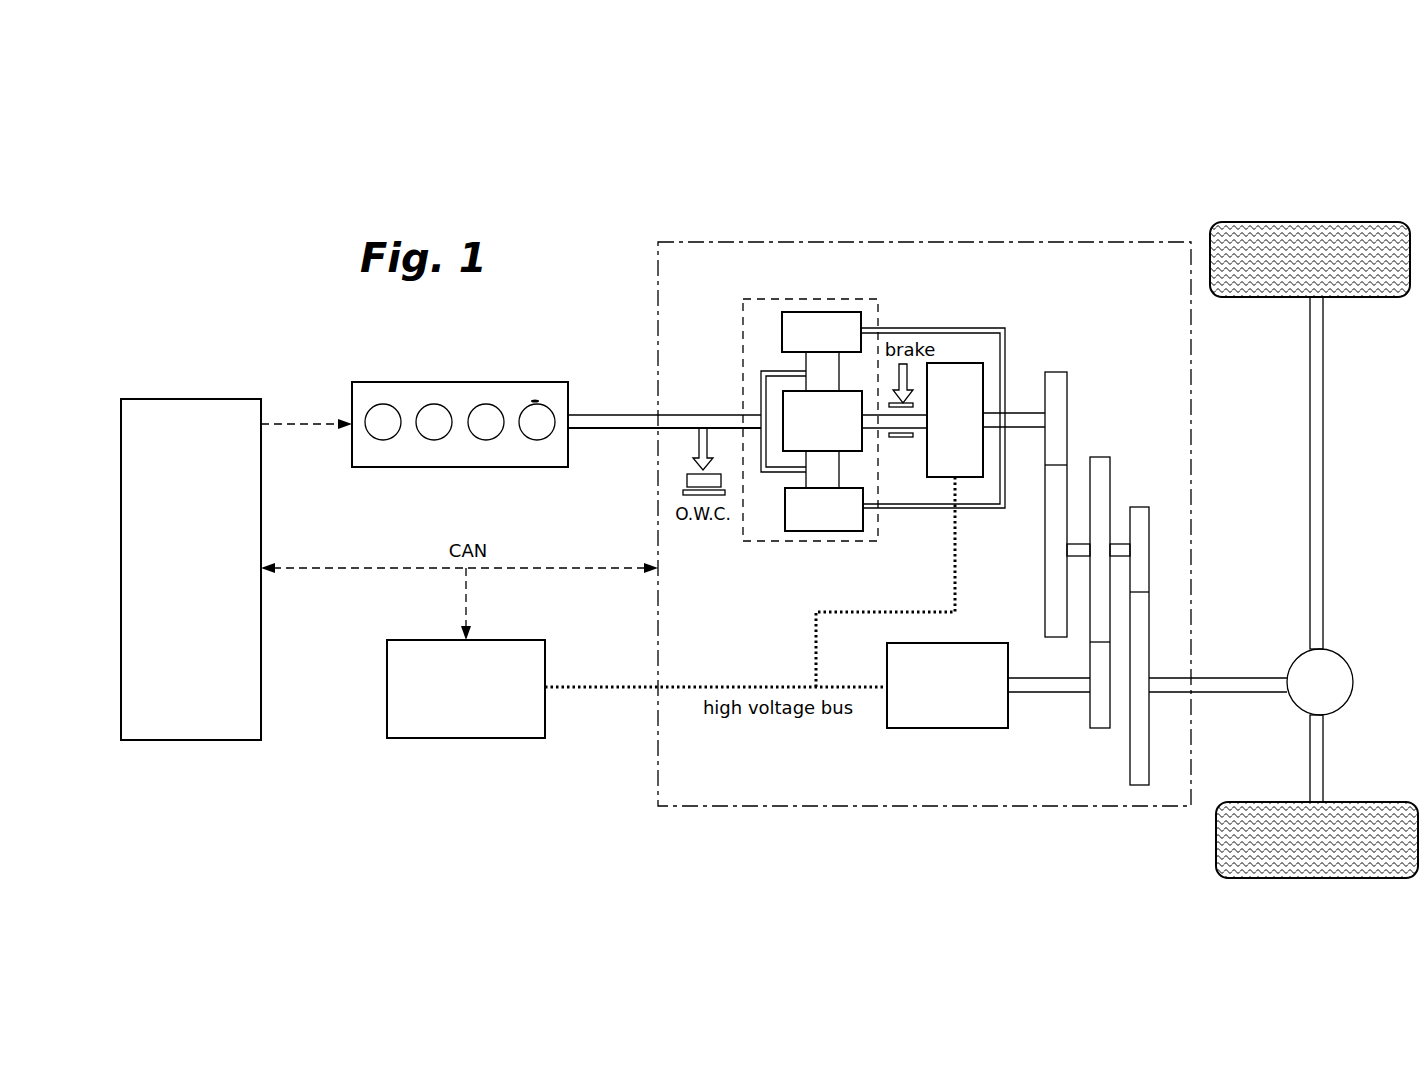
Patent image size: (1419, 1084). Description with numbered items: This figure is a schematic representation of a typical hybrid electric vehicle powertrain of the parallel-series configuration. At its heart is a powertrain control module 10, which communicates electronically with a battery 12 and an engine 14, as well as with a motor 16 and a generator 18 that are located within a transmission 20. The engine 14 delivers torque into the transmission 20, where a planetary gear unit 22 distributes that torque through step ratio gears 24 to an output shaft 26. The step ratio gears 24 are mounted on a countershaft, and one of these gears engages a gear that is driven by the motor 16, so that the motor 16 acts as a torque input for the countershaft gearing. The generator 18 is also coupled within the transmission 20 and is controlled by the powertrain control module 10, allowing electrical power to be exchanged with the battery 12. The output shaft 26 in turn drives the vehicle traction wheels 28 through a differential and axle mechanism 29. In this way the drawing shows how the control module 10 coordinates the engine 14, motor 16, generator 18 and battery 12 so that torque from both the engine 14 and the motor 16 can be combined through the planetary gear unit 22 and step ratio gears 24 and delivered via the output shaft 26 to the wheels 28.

The powertrain control module 10 is at (210, 399).
The battery 12 is at (487, 740).
The engine 14 is at (528, 382).
The motor 16 is at (952, 730).
The generator 18 is at (983, 373).
The transmission 20 is at (765, 812).
The planetary gear unit 22 is at (878, 313).
The step ratio gears 24 is at (865, 449).
The output shaft 26 is at (1260, 694).
The vehicle traction wheels 28 is at (1350, 222).
The differential and axle mechanism 29 is at (1343, 680).